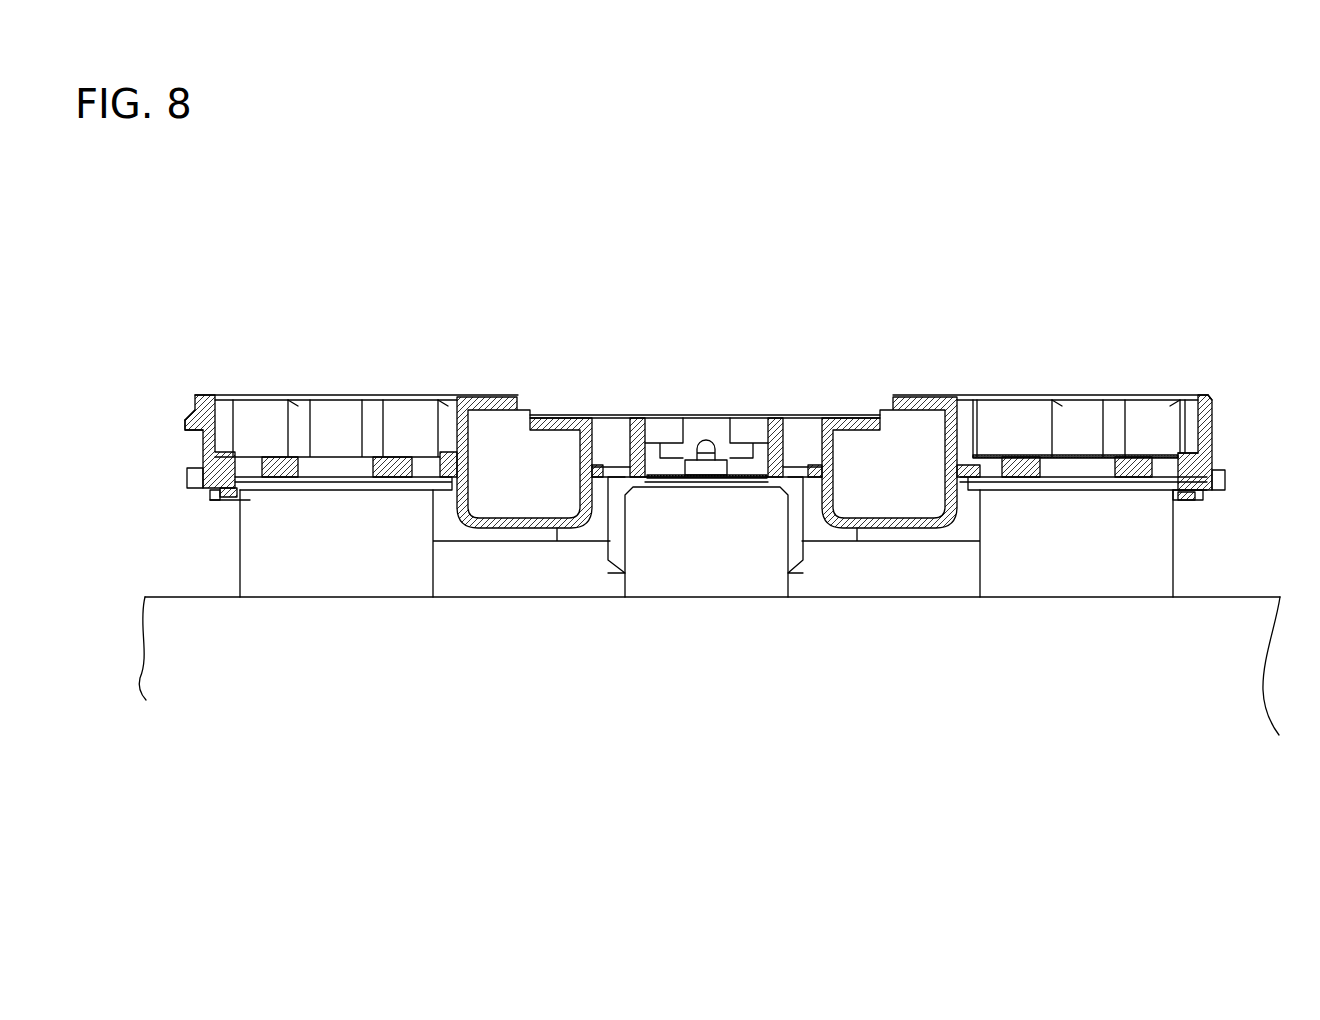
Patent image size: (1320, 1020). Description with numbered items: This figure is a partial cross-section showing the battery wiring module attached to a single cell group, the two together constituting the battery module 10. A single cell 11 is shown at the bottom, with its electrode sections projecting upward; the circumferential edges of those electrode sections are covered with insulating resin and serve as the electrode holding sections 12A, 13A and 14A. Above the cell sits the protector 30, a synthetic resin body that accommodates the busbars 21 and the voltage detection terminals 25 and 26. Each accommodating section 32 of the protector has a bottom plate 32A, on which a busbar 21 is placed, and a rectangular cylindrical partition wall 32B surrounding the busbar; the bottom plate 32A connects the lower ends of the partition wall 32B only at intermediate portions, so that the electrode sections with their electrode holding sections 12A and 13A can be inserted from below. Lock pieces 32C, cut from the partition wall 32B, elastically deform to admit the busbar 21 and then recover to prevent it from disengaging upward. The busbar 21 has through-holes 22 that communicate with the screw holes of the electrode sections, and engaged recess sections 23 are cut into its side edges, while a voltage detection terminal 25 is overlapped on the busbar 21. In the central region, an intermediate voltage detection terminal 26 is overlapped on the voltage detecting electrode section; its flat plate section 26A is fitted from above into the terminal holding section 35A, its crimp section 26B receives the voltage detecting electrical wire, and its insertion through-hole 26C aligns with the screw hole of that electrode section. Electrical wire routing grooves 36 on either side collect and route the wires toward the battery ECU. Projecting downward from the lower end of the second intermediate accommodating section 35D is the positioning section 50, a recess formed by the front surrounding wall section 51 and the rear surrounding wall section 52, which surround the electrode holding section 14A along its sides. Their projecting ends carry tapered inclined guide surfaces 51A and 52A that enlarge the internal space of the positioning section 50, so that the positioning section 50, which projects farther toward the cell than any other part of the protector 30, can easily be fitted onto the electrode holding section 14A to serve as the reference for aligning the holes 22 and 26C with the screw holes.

The battery module 10 is at (341, 317).
The single cell 11 is at (1243, 648).
The electrode holding section 12A is at (1127, 577).
The electrode holding section 13A is at (311, 578).
The electrode holding section 14A is at (752, 557).
The busbar 21 is at (237, 487).
The through-hole 22 is at (298, 466).
The engaged recess section 23 is at (982, 462).
The voltage detection terminal 25 is at (1176, 444).
The intermediate voltage detection terminal 26 is at (603, 708).
The flat plate section 26A is at (668, 478).
The crimp section 26B is at (710, 465).
The insertion through-hole 26C is at (685, 480).
The protector 30 is at (163, 449).
The accommodating section 32 is at (194, 381).
The bottom plate 32A is at (407, 480).
The partition wall 32B is at (215, 420).
The lock piece 32C is at (1173, 447).
The terminal holding section 35A is at (653, 432).
The second intermediate accommodating section 35D is at (633, 387).
The electrical wire routing groove 36 is at (532, 507).
The positioning section 50 is at (808, 332).
The front surrounding wall section 51 is at (617, 508).
The rear surrounding wall section 52 is at (795, 513).
The inclined guide surface 51A is at (618, 562).
The inclined guide surface 52A is at (797, 567).